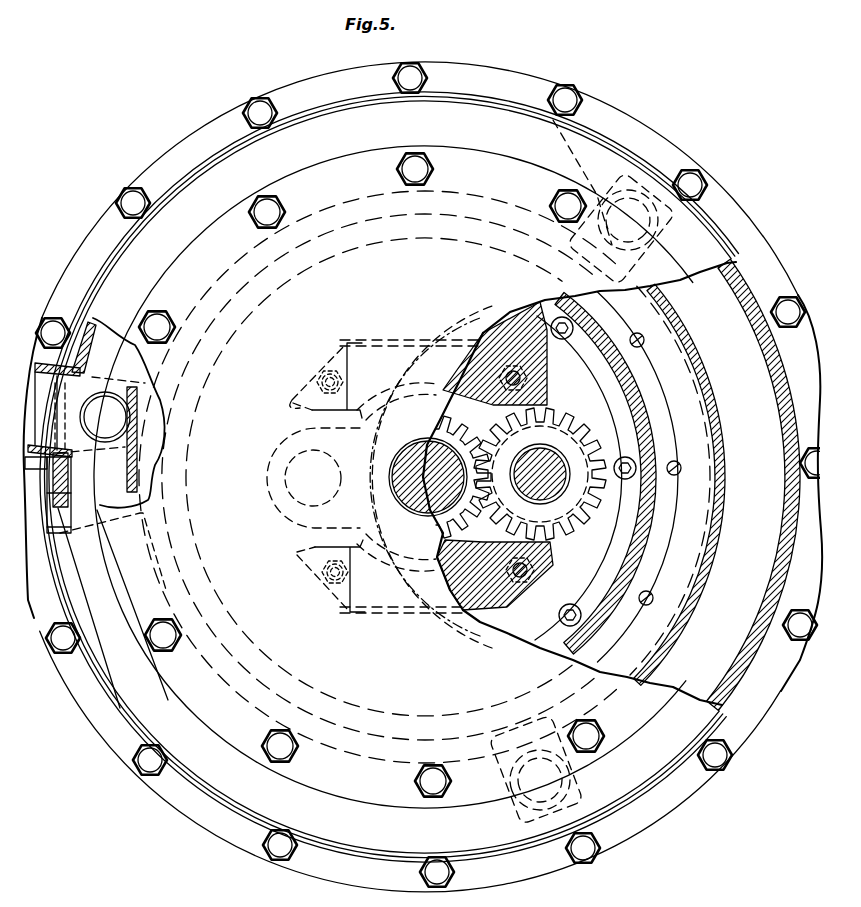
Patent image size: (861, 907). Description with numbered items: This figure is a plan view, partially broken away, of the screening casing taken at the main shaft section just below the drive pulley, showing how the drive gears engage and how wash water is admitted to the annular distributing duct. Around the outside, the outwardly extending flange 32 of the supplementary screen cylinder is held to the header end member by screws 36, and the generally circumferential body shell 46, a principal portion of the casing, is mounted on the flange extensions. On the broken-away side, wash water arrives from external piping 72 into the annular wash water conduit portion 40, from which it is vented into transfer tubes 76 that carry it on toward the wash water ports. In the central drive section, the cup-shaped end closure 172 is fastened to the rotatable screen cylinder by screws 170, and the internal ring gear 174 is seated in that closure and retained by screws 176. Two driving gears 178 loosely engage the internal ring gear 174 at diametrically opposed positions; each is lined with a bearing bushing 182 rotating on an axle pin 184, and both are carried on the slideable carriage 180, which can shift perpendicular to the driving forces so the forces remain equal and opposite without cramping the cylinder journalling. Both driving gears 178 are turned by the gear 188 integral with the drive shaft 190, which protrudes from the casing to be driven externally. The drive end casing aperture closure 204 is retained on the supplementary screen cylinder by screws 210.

The outwardly extending flange 32 is at (102, 720).
The screws 36 is at (424, 80).
The annular wash water conduit portion 40 is at (74, 473).
The body shell 46 is at (58, 565).
The external piping 72 is at (48, 452).
The transfer tubes 76 is at (116, 427).
The screws 170 is at (644, 338).
The cup-shaped end closure 172 is at (660, 398).
The internal ring gear 174 is at (628, 539).
The screws 176 is at (566, 338).
The driving gears 178 is at (552, 522).
The slideable carriage 180 is at (482, 530).
The bearing bushing 182 is at (569, 479).
The axle pin 184 is at (536, 464).
The gear 188 is at (437, 553).
The drive shaft 190 is at (423, 442).
The drive end casing aperture closure 204 is at (462, 668).
The screws 210 is at (420, 172).